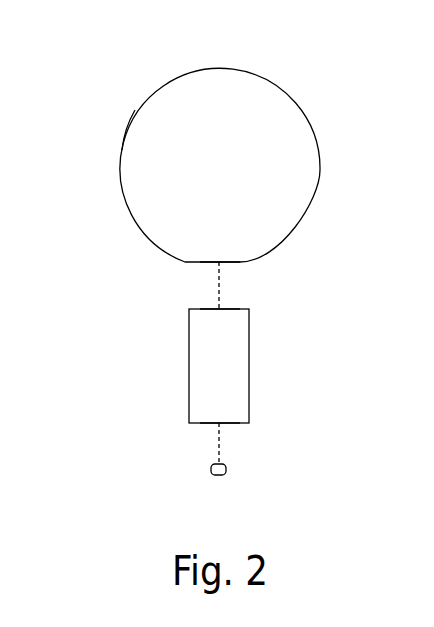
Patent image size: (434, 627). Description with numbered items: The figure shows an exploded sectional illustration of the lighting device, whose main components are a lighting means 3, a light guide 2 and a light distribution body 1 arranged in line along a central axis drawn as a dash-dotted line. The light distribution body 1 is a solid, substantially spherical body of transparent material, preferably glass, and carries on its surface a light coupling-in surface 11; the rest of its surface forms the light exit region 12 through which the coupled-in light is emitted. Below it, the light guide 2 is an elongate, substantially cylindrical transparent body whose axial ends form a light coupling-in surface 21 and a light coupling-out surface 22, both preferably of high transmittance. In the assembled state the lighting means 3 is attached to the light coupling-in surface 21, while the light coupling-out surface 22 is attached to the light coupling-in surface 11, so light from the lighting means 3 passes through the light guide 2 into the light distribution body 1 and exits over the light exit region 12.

The light distribution body 1 is at (150, 72).
The light coupling-in surface 11 is at (237, 262).
The light exit region 12 is at (135, 144).
The light guide 2 is at (189, 358).
The light coupling-in surface 21 is at (233, 423).
The light coupling-out surface 22 is at (205, 309).
The lighting means 3 is at (211, 469).